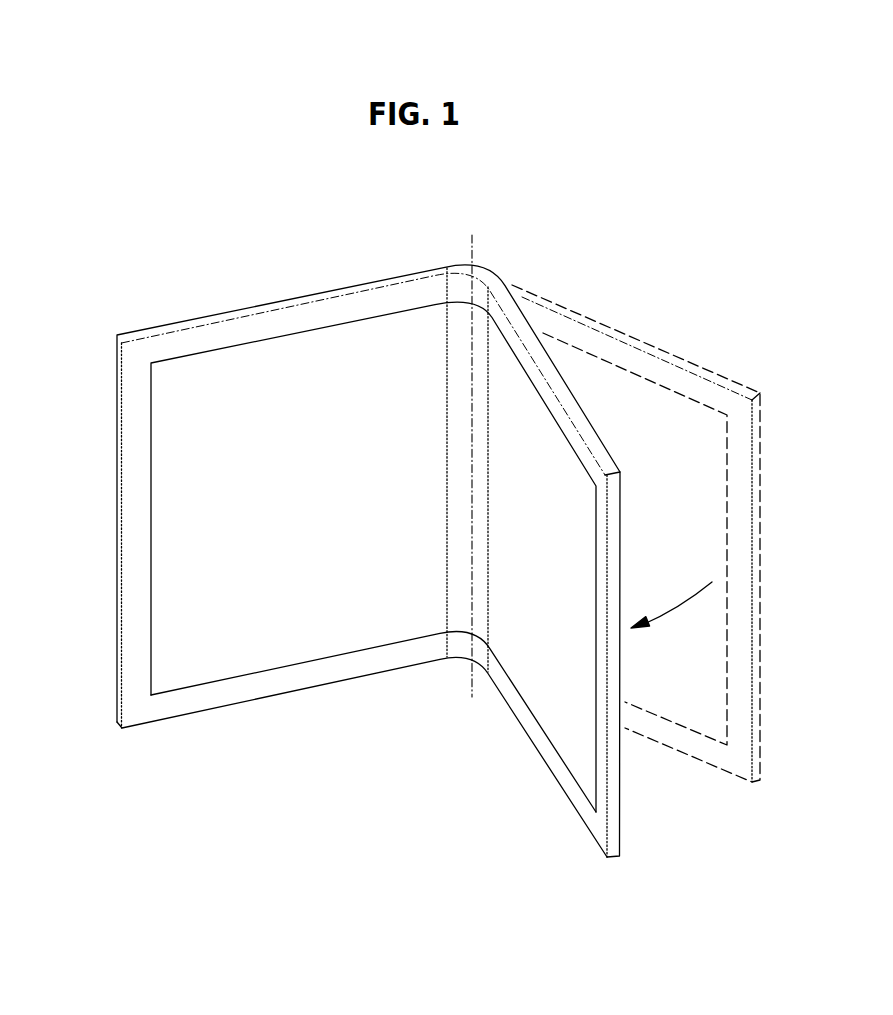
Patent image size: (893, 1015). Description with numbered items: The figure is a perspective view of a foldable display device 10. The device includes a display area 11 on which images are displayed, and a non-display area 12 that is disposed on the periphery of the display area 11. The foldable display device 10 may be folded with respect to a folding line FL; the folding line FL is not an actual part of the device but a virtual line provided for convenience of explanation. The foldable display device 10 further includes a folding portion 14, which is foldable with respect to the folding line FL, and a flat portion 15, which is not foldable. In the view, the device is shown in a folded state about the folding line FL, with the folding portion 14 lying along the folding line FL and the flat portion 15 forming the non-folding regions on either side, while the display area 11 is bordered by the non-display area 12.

The foldable display device 10 is at (628, 281).
The display area 11 is at (150, 477).
The non-display area 12 is at (135, 520).
The folding portion 14 is at (460, 283).
The flat portion 15 is at (378, 348).
The folding line FL is at (473, 252).